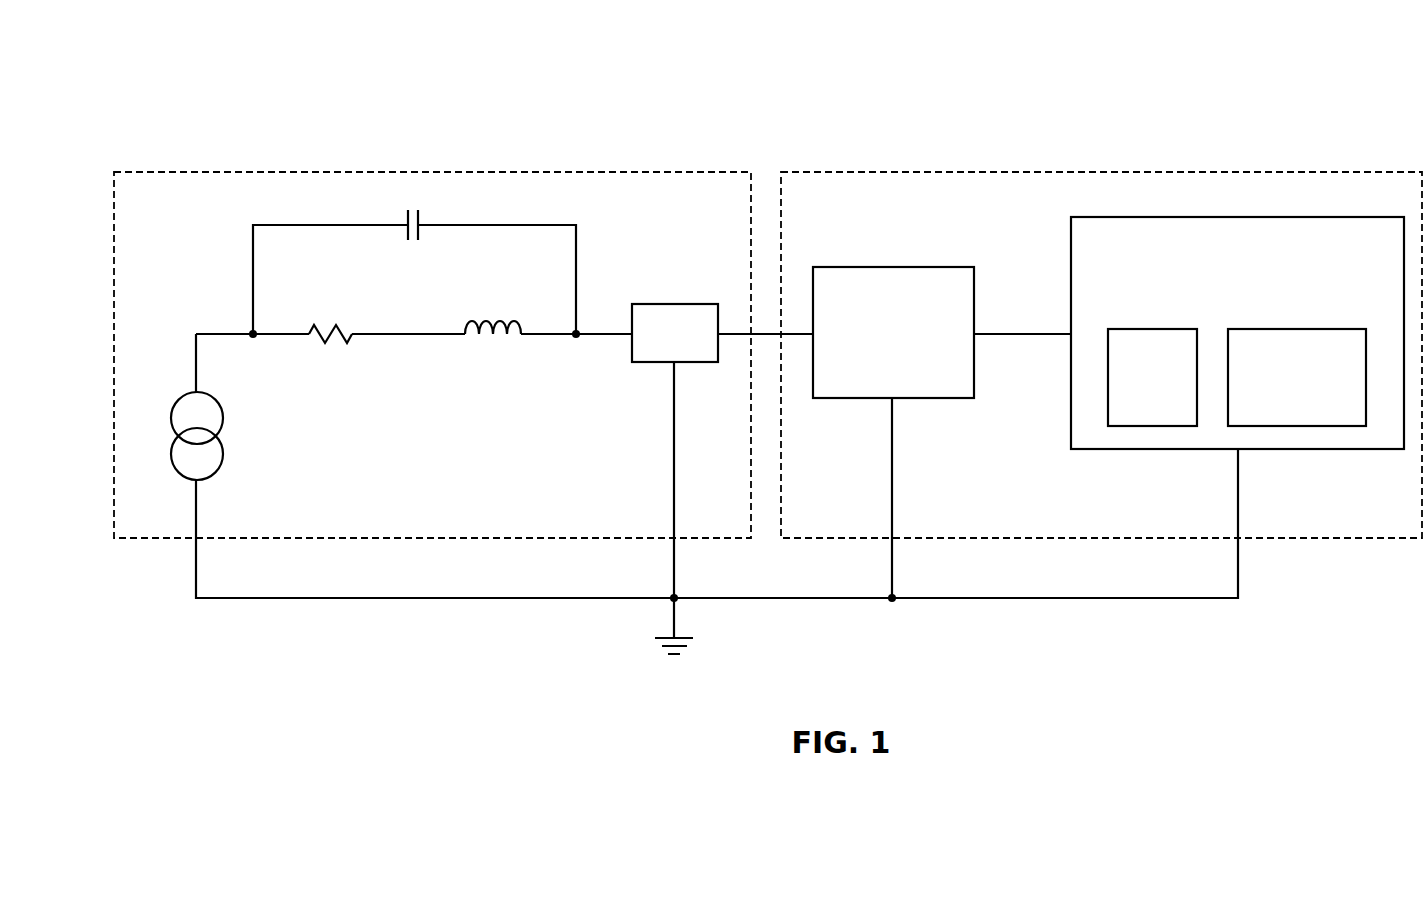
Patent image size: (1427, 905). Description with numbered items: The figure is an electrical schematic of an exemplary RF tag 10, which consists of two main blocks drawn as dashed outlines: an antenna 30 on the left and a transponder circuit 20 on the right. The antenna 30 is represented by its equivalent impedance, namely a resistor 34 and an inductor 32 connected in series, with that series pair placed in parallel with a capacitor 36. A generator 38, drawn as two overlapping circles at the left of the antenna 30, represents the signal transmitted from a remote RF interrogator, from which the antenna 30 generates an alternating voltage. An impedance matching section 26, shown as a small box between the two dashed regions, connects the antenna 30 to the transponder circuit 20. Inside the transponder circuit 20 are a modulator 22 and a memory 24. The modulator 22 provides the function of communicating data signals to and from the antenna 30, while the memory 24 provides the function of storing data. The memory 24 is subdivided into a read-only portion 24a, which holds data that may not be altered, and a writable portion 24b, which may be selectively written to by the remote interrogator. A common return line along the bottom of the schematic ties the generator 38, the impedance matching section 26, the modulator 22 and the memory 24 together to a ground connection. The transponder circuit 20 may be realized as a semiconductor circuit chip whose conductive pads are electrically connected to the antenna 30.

The RF tag 10 is at (188, 64).
The transponder circuit 20 is at (843, 168).
The modulator 22 is at (867, 266).
The memory 24 is at (1124, 216).
The read-only portion 24a is at (1149, 328).
The writable portion 24b is at (1299, 328).
The impedance matching section 26 is at (672, 302).
The antenna 30 is at (176, 168).
The inductor 32 is at (489, 318).
The resistor 34 is at (323, 323).
The capacitor 36 is at (411, 213).
The generator 38 is at (222, 455).